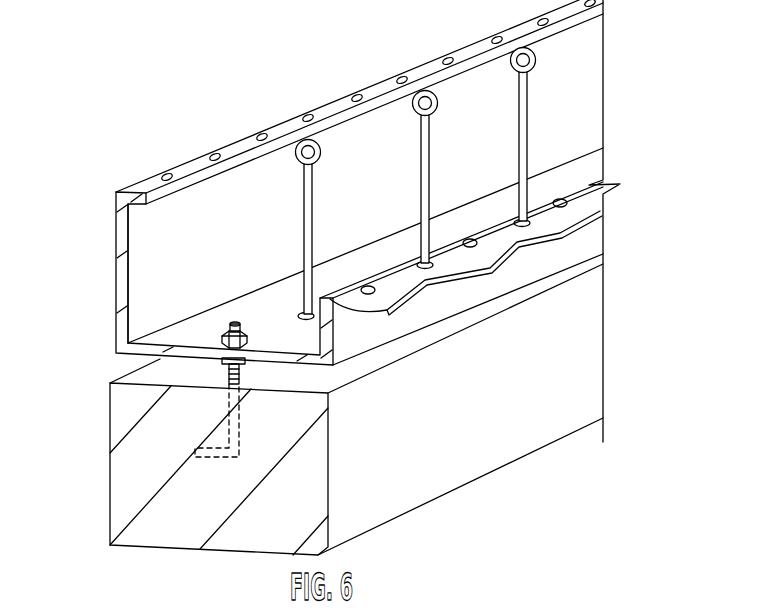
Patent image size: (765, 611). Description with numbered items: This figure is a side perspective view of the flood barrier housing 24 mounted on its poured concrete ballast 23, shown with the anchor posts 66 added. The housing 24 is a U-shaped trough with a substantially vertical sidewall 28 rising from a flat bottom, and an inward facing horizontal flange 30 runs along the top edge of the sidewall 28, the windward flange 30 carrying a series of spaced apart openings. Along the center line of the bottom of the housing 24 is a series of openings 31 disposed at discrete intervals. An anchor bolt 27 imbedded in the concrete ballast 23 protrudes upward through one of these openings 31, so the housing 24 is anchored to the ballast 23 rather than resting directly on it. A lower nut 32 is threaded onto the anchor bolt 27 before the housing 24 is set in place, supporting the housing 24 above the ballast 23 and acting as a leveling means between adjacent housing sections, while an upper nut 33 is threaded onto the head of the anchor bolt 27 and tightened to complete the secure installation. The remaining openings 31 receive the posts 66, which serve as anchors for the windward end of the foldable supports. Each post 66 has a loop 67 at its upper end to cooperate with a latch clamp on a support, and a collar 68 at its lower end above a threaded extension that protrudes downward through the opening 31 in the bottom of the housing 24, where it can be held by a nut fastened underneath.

The concrete ballast 23 is at (443, 440).
The housing 24 is at (113, 293).
The anchor bolt 27 is at (187, 453).
The sidewall 28 is at (214, 243).
The horizontal flange 30 is at (160, 192).
The opening 31 is at (380, 291).
The lower nut 32 is at (243, 364).
The upper nut 33 is at (217, 342).
The post 66 is at (523, 122).
The loop 67 is at (309, 147).
The collar 68 is at (527, 220).